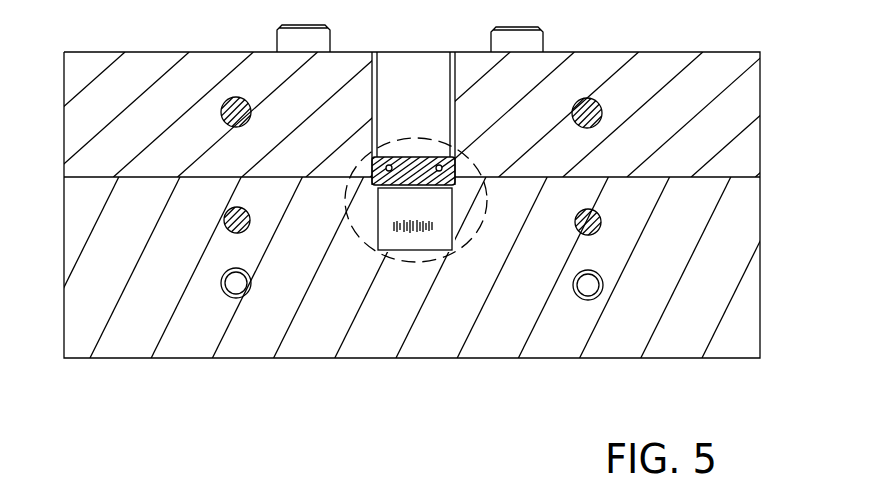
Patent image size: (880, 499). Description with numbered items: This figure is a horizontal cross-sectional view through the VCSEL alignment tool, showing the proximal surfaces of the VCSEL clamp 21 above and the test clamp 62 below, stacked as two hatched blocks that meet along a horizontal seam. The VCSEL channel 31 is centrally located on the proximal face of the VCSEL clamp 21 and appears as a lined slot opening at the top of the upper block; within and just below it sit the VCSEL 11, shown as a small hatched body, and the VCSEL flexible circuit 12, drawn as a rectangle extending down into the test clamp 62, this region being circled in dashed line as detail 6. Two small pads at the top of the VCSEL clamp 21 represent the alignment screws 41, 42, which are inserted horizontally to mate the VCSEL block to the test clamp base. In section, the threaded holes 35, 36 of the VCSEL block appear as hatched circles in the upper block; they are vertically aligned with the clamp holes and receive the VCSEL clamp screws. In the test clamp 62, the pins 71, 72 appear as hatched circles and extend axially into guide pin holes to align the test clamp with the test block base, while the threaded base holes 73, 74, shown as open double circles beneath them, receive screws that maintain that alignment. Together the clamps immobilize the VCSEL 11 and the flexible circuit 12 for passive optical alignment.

The VCSEL clamp 21 is at (735, 118).
The test clamp 62 is at (735, 260).
The VCSEL channel 31 is at (408, 87).
The alignment screw 41 is at (331, 29).
The alignment screw 42 is at (545, 28).
The threaded hole 35 is at (223, 111).
The threaded hole 36 is at (600, 101).
The pin 71 is at (226, 235).
The pin 72 is at (601, 224).
The threaded base hole 73 is at (222, 283).
The threaded base hole 74 is at (574, 293).
The device region 6 is at (390, 143).
The VCSEL 11 is at (418, 178).
The VCSEL flexible circuit 12 is at (437, 238).